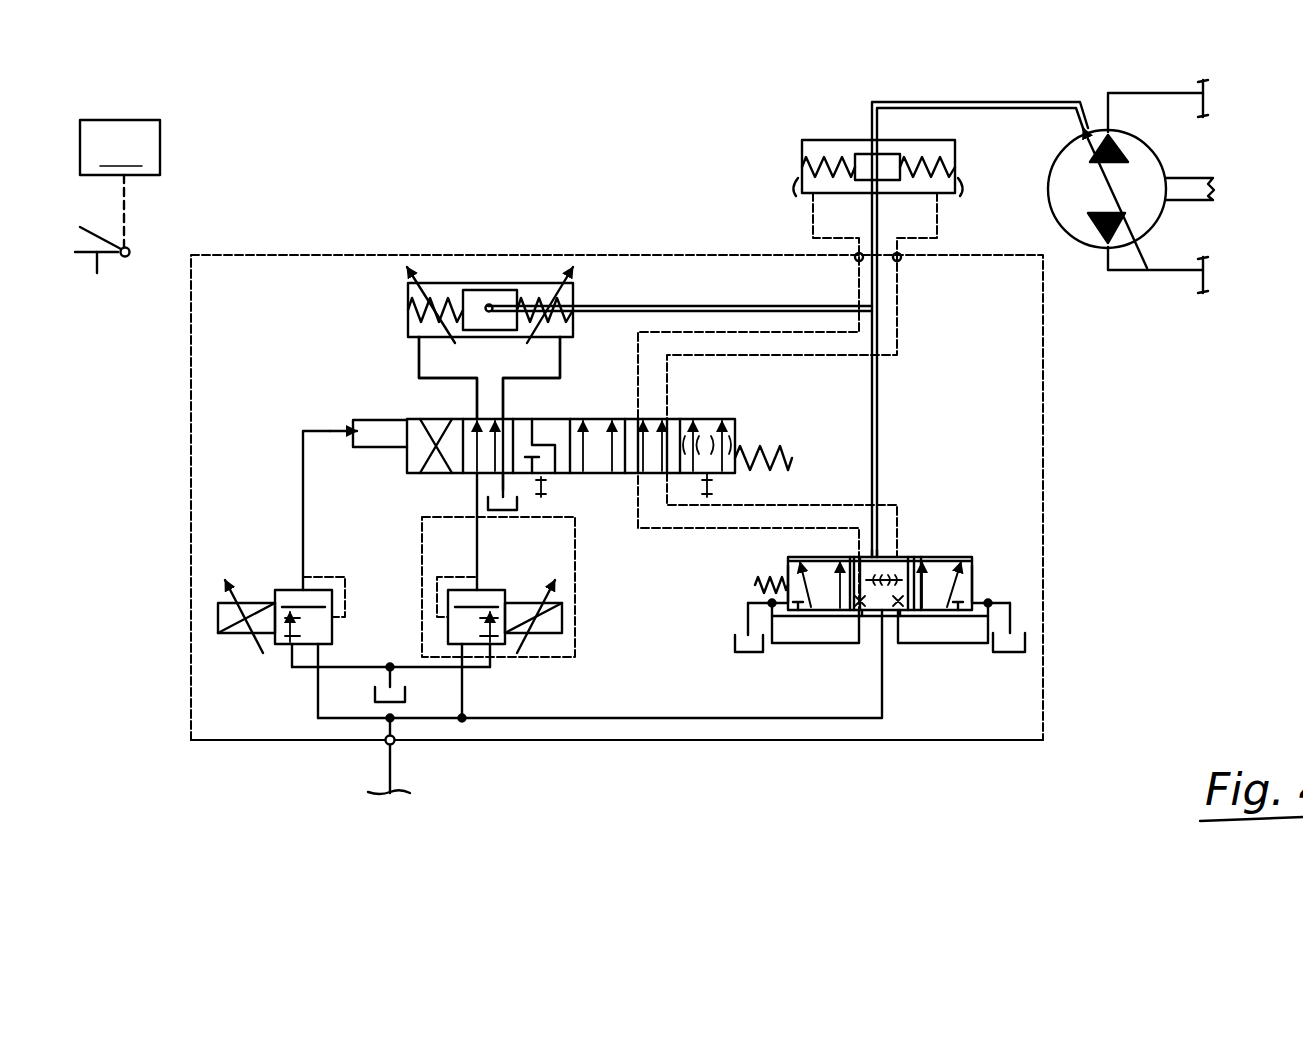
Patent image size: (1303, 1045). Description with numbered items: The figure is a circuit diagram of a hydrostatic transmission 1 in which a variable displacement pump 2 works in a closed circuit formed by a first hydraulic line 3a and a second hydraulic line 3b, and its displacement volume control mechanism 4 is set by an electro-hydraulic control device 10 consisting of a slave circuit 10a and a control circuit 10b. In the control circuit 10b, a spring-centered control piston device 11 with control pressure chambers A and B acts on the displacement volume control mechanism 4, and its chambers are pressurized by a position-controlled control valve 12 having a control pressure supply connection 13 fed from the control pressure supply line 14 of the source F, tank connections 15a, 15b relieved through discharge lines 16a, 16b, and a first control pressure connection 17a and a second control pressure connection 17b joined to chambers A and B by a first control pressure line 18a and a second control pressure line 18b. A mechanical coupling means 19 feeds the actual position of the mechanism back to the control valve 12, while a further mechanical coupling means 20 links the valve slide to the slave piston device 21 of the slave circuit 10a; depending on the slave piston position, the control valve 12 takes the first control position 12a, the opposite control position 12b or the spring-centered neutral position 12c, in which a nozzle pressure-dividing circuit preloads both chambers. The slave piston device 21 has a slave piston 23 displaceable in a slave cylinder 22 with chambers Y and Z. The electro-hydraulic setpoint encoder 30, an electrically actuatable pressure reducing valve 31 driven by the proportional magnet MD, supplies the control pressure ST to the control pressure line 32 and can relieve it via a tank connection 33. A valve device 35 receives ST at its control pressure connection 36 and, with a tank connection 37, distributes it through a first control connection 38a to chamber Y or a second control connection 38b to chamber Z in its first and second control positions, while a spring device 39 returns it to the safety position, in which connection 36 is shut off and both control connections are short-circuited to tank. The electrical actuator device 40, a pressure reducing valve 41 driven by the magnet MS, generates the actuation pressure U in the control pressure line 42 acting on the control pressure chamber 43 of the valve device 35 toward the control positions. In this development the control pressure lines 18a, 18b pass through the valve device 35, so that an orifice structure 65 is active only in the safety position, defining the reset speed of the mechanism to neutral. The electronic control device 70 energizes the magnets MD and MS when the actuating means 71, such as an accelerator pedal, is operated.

The hydrostatic transmission 1 is at (1087, 97).
The variable displacement pump 2 is at (1152, 156).
The first hydraulic line 3a is at (1167, 93).
The second hydraulic line 3b is at (1170, 273).
The displacement volume control mechanism 4 is at (1085, 128).
The electro-hydraulic control device 10 is at (283, 187).
The slave circuit 10a is at (288, 747).
The control circuit 10b is at (805, 748).
The control piston device 11 is at (862, 140).
The control valve 12 is at (990, 561).
The first control position 12a is at (808, 610).
The second valve port 12b is at (898, 610).
The neutral position 12c is at (880, 558).
The control pressure supply connection 13 is at (882, 618).
The control pressure supply line 14 is at (388, 763).
The tank connection 15a is at (862, 610).
The tank connection 15b is at (900, 618).
The discharge line 16a is at (748, 615).
The discharge line 16b is at (1012, 627).
The first control pressure connection 17a is at (862, 553).
The second control pressure connection 17b is at (900, 557).
The first control pressure line 18a is at (660, 528).
The second control pressure line 18b is at (827, 505).
The mechanical coupling means 19 is at (880, 292).
The mechanical coupling means 20 is at (679, 288).
The slave piston device 21 is at (490, 273).
The slave cylinder 22 is at (537, 283).
The slave piston 23 is at (470, 297).
The electro-hydraulic setpoint encoder 30 is at (575, 603).
The pressure reducing valve 31 is at (496, 637).
The control pressure line 32 is at (474, 532).
The tank connection 33 is at (477, 668).
The valve device 35 is at (740, 415).
The control pressure connection 36 is at (475, 477).
The tank connection 37 is at (505, 475).
The first control connection 38a is at (470, 414).
The second control connection 38b is at (500, 412).
The spring device 39 is at (794, 456).
The electrical actuator device 40 is at (242, 648).
The pressure reducing valve 41 is at (290, 644).
The control pressure line 42 is at (302, 455).
The control pressure chamber 43 is at (368, 418).
The orifice structure 65 is at (707, 440).
The electronic control device 70 is at (120, 183).
The actuating means 71 is at (102, 275).